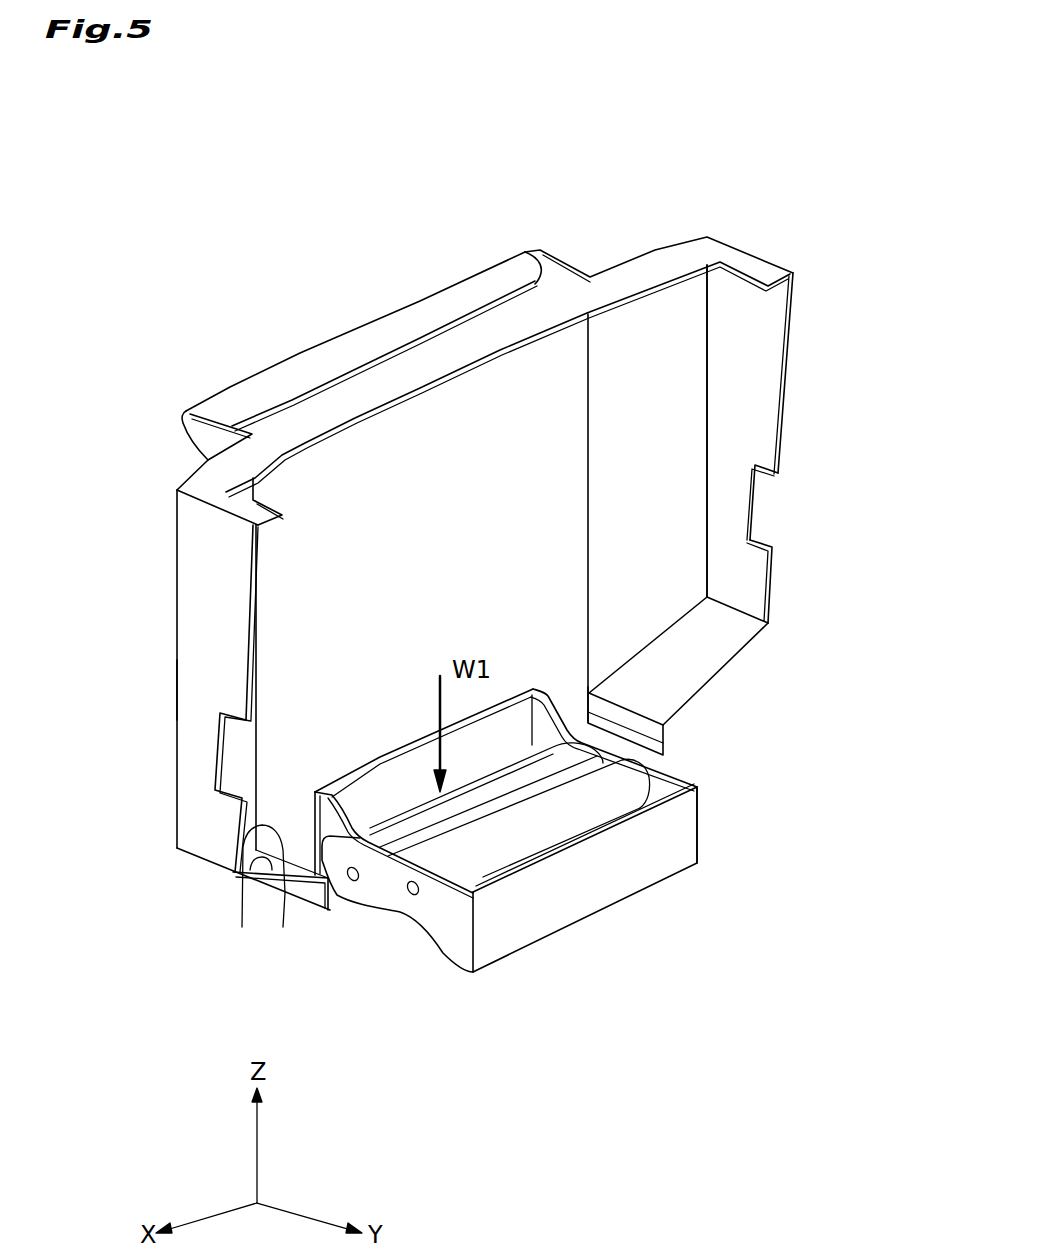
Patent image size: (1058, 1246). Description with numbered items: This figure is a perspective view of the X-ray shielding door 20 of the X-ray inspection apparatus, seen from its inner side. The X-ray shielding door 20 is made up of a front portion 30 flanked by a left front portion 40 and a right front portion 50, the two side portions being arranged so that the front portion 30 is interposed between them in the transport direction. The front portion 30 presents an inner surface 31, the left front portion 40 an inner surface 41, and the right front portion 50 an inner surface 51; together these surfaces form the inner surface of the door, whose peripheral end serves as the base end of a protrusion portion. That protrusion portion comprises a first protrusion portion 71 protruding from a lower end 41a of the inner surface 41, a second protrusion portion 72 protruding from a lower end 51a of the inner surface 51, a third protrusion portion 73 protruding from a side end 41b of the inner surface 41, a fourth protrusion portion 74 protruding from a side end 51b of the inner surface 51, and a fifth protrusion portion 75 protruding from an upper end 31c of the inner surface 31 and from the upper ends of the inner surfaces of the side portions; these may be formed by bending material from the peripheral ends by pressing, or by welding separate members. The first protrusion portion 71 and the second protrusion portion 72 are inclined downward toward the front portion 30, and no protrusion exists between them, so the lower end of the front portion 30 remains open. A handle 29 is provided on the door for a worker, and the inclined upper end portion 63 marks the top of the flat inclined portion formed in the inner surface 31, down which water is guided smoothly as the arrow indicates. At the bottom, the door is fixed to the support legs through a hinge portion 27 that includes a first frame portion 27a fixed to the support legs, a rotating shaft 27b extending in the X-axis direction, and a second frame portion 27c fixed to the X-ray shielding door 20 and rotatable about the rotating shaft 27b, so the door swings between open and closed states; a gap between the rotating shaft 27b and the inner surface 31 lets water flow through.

The X-ray shielding door 20 is at (740, 200).
The hinge portion 27 is at (597, 915).
The first frame portion 27a is at (677, 837).
The rotating shaft 27b is at (347, 887).
The second frame portion 27c is at (548, 722).
The handle 29 is at (407, 327).
The front portion 30 is at (490, 526).
The inner surface 31 is at (313, 575).
The upper end 31c is at (310, 383).
The left front portion 40 is at (665, 404).
The inner surface 41 is at (667, 473).
The lower end 41a is at (672, 617).
The side end 41b is at (707, 455).
The right front portion 50 is at (232, 604).
The inner surface 51 is at (245, 740).
The lower end 51a is at (283, 927).
The side end 51b is at (177, 690).
The inclined upper end portion 63 is at (467, 314).
The first protrusion portion 71 is at (700, 660).
The second protrusion portion 72 is at (254, 882).
The third protrusion portion 73 is at (753, 378).
The fourth protrusion portion 74 is at (198, 830).
The fifth protrusion portion 75 is at (235, 463).